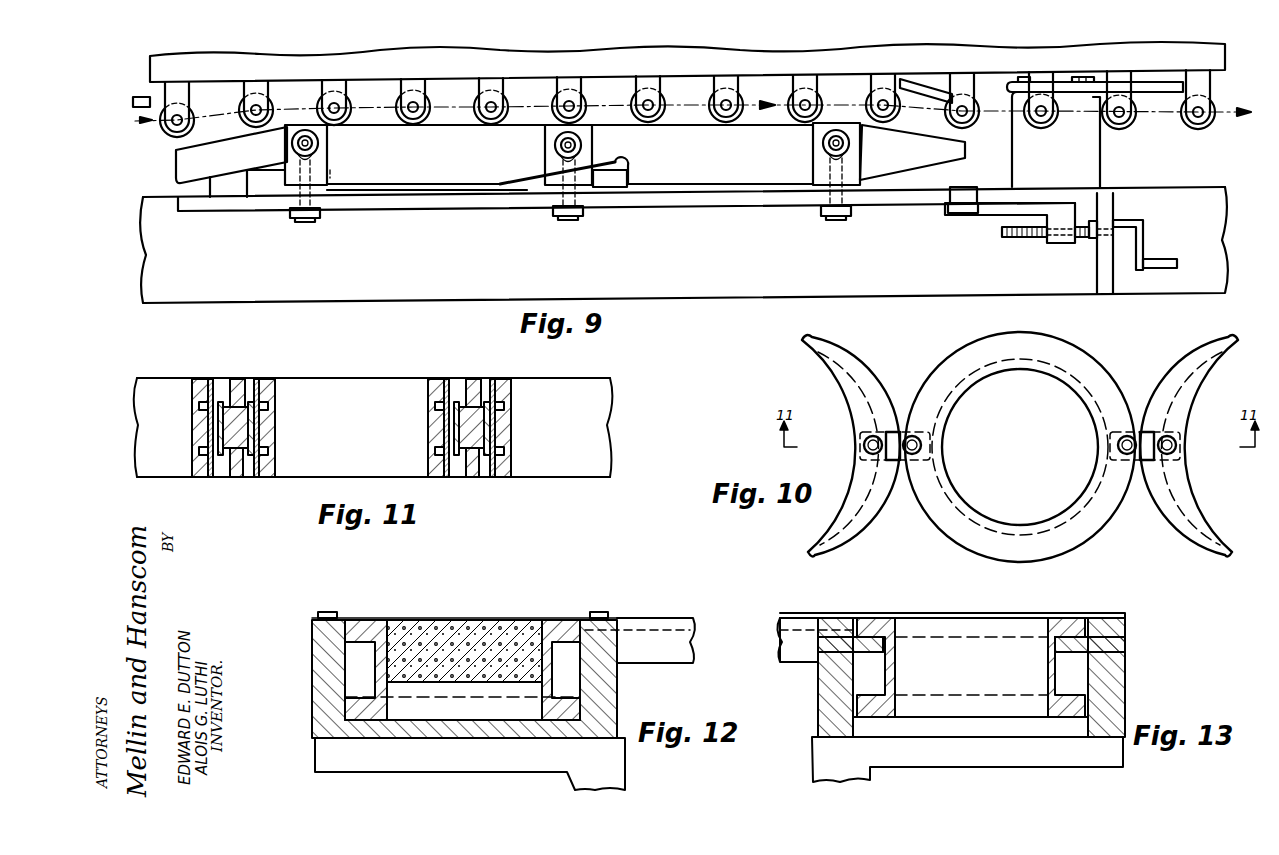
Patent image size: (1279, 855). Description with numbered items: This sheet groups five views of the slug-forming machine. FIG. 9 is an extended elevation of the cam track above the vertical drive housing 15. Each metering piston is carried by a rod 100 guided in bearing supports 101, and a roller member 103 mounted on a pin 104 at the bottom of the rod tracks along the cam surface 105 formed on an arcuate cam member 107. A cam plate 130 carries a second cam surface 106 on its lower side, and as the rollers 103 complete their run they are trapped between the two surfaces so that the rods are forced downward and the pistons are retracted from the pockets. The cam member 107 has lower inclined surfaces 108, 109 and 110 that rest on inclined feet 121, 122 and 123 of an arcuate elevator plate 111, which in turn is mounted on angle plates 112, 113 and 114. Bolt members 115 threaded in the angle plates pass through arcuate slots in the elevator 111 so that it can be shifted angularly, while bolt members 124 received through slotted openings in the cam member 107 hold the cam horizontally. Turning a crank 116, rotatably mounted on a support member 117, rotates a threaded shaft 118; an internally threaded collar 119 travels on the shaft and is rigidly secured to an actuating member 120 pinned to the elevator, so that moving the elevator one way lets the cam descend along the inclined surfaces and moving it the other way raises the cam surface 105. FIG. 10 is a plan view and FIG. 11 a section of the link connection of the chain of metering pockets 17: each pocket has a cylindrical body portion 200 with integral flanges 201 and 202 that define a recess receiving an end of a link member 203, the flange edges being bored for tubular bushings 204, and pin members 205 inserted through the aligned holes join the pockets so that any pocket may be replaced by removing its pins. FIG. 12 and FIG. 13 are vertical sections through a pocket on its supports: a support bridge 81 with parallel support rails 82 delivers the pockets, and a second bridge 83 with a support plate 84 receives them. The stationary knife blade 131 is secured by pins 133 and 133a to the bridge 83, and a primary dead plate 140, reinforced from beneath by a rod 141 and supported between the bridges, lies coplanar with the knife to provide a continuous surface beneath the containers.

In FIG. 9, the vertical drive housing 15 is at (678, 255).
In FIG. 11, the metering pocket 17 is at (436, 480).
In FIG. 10, the metering pocket 17 is at (940, 370).
In FIG. 12, the metering pocket 17 is at (540, 714).
In FIG. 13, the metering pocket 17 is at (1048, 634).
In FIG. 13, the support bridge 81 is at (810, 724).
In FIG. 13, the support rail 82 is at (884, 655).
In FIG. 12, the second bridge 83 is at (632, 760).
In FIG. 12, the support plate 84 is at (312, 671).
In FIG. 9, the rod 100 is at (578, 90).
In FIG. 9, the bearing support 101 is at (706, 48).
In FIG. 9, the roller member 103 is at (476, 95).
In FIG. 9, the pin 104 is at (300, 102).
In FIG. 9, the cam surface 105 is at (686, 112).
In FIG. 9, the cam surface 106 is at (1082, 101).
In FIG. 9, the arcuate cam member 107 is at (472, 161).
In FIG. 9, the inclined surface 108 is at (276, 174).
In FIG. 9, the inclined surface 109 is at (628, 168).
In FIG. 9, the inclined surface 110 is at (958, 162).
In FIG. 9, the arcuate elevator plate 111 is at (893, 200).
In FIG. 9, the angle plate 112 is at (808, 174).
In FIG. 9, the angle plate 113 is at (616, 202).
In FIG. 9, the angle plate 114 is at (335, 172).
In FIG. 9, the bolt member 115 is at (310, 222).
In FIG. 9, the crank 116 is at (1168, 262).
In FIG. 9, the support member 117 is at (1108, 256).
In FIG. 9, the threaded shaft 118 is at (1025, 240).
In FIG. 9, the internally threaded collar 119 is at (1058, 245).
In FIG. 9, the actuating member 120 is at (988, 222).
In FIG. 9, the inclined foot 121 is at (238, 202).
In FIG. 9, the inclined foot 122 is at (548, 206).
In FIG. 9, the inclined foot 123 is at (956, 192).
In FIG. 9, the bolt member 124 is at (320, 145).
In FIG. 9, the cam plate 130 is at (1010, 82).
In FIG. 12, the stationary knife blade 131 is at (460, 618).
In FIG. 12, the pin 133 is at (325, 610).
In FIG. 12, the pin 133a is at (596, 610).
In FIG. 12, the primary dead plate 140 is at (656, 612).
In FIG. 13, the primary dead plate 140 is at (985, 612).
In FIG. 12, the rod 141 is at (650, 662).
In FIG. 13, the rod 141 is at (800, 656).
In FIG. 11, the cylindrical body portion 200 is at (276, 425).
In FIG. 10, the cylindrical body portion 200 is at (850, 476).
In FIG. 12, the cylindrical body portion 200 is at (378, 672).
In FIG. 13, the cylindrical body portion 200 is at (896, 674).
In FIG. 11, the flange 201 is at (232, 378).
In FIG. 10, the flange 201 is at (1103, 514).
In FIG. 12, the flange 201 is at (370, 618).
In FIG. 13, the flange 201 is at (876, 618).
In FIG. 11, the flange 202 is at (235, 480).
In FIG. 12, the flange 202 is at (398, 708).
In FIG. 13, the flange 202 is at (880, 712).
In FIG. 11, the link member 203 is at (246, 440).
In FIG. 10, the link member 203 is at (893, 432).
In FIG. 11, the tubular bushing 204 is at (272, 403).
In FIG. 11, the pin member 205 is at (210, 479).
In FIG. 10, the pin member 205 is at (912, 455).